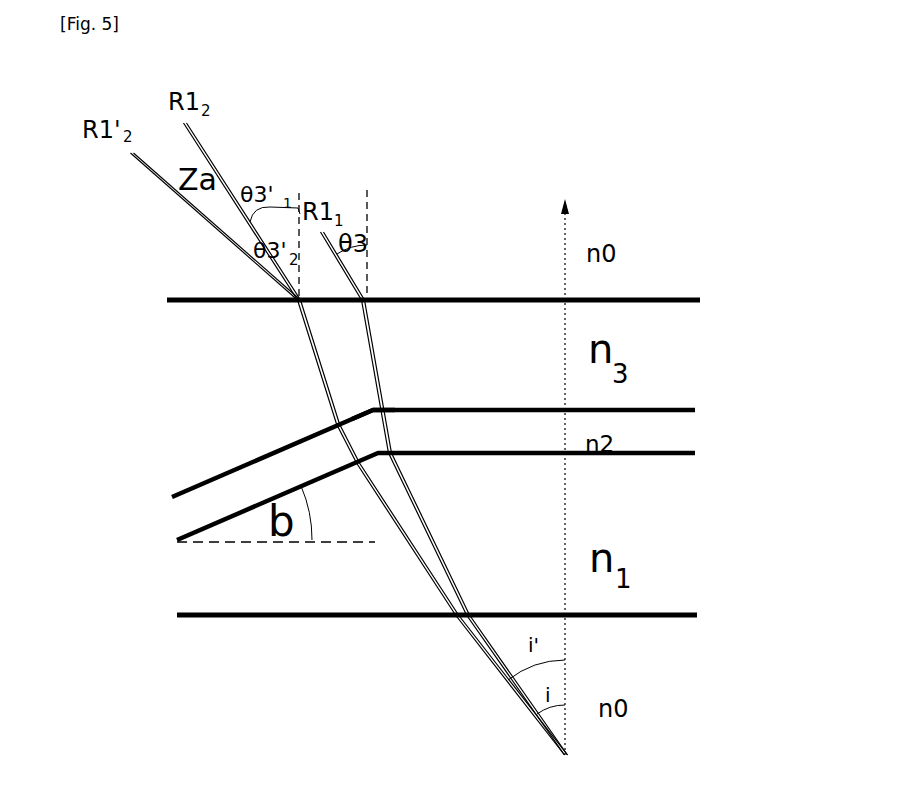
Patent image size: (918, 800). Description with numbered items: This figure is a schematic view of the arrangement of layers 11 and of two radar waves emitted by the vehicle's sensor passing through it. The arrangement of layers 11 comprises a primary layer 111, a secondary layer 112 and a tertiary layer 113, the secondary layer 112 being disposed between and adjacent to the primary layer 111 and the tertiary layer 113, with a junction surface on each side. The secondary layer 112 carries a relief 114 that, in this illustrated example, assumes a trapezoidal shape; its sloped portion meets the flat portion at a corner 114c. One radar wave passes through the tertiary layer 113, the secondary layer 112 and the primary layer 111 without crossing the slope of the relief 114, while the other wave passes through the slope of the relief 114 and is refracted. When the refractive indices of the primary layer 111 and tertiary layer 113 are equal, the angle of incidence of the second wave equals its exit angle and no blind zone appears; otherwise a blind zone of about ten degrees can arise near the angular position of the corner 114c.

The arrangement of layers 11 is at (519, 465).
The primary layer 111 is at (486, 546).
The secondary layer 112 is at (484, 436).
The tertiary layer 113 is at (781, 298).
The relief 114 is at (433, 418).
The corner of the relief 114c is at (370, 408).